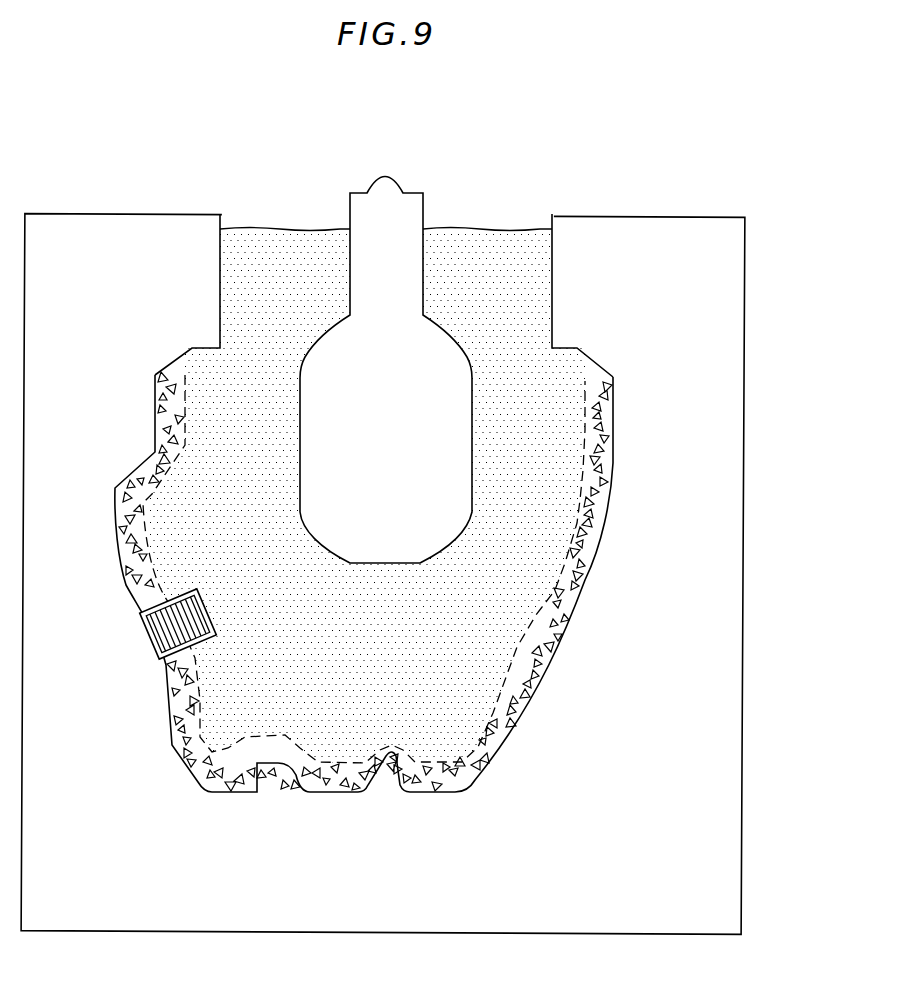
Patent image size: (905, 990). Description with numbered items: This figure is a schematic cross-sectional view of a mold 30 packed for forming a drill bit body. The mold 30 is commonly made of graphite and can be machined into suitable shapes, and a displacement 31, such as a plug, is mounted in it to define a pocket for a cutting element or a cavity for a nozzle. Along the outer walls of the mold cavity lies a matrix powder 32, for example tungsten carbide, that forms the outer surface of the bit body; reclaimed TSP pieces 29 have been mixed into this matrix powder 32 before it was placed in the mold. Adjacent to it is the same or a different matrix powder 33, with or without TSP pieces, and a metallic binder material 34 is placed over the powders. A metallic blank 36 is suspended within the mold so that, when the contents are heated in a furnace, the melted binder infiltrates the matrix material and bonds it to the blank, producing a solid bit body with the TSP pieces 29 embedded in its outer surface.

The TSP pieces 29 is at (158, 453).
The mold 30 is at (673, 672).
The displacement 31 is at (157, 633).
The matrix powder 32 is at (605, 427).
The matrix powder 33 is at (557, 390).
The metallic binder material 34 is at (485, 258).
The metallic blank 36 is at (402, 220).